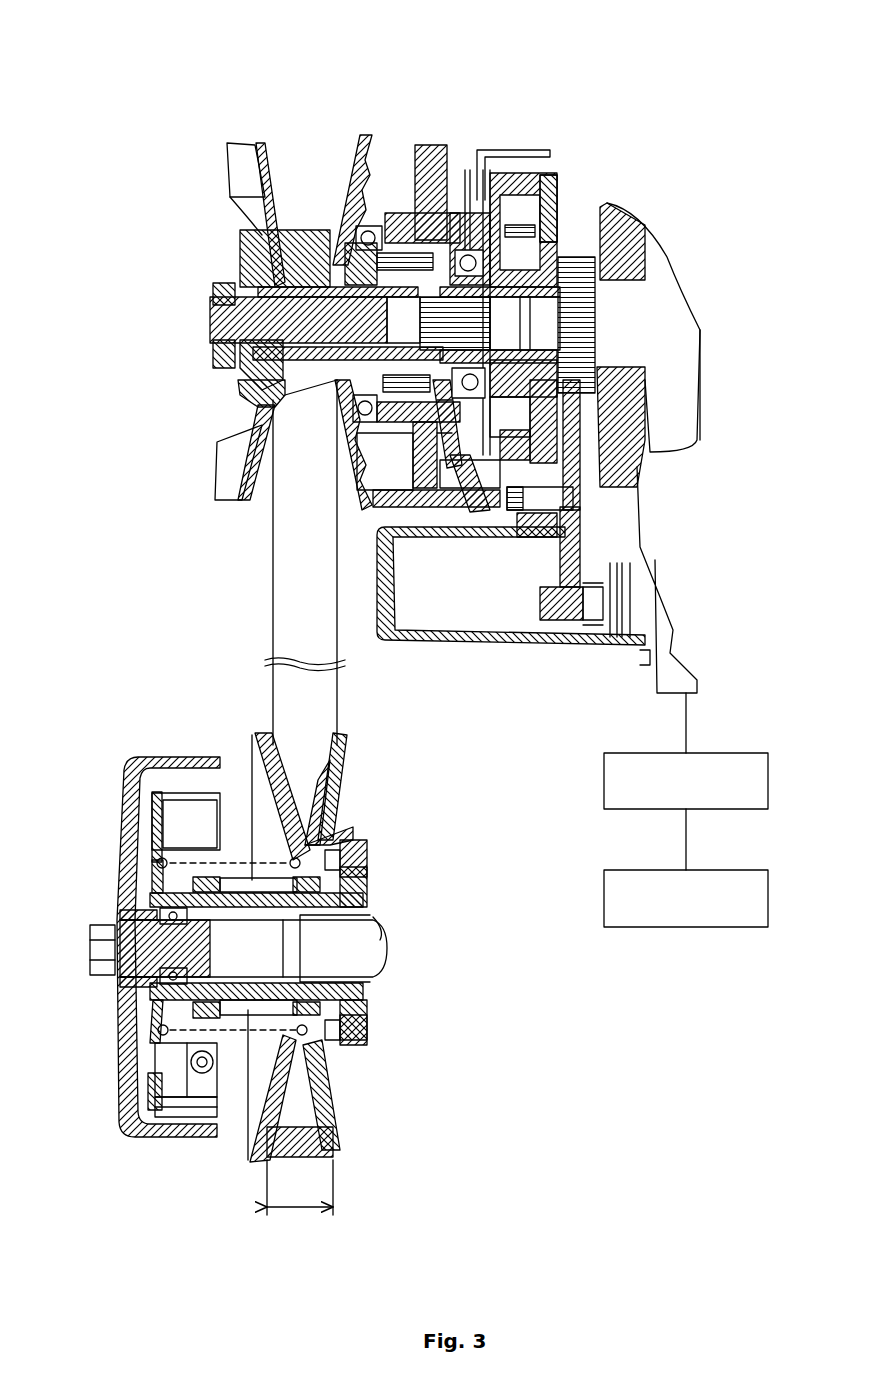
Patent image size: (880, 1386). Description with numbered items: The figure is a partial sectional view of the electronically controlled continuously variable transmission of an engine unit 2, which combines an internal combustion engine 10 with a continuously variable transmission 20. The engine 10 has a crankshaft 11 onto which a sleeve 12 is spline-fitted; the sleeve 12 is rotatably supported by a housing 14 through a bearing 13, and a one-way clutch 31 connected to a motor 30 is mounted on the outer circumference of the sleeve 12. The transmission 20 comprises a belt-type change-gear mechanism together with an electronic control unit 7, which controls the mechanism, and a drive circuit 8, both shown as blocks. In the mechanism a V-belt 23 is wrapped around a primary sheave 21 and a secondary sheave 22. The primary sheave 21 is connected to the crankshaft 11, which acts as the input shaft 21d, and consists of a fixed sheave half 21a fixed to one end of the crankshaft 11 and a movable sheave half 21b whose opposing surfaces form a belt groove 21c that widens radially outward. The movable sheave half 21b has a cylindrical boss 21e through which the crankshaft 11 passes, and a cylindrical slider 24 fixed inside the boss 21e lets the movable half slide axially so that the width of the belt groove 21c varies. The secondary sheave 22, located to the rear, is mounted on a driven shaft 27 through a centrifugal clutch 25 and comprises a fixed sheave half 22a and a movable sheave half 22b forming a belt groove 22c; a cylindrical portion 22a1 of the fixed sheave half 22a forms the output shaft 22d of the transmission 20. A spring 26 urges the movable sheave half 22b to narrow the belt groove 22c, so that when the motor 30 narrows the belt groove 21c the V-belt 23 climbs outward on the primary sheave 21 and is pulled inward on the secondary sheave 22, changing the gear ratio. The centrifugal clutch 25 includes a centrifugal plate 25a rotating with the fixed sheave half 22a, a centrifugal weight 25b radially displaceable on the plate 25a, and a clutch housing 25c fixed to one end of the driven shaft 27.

The engine unit 2 is at (585, 95).
The electronic control unit 7 is at (768, 890).
The drive circuit 8 is at (768, 775).
The internal combustion engine 10 is at (705, 375).
The crankshaft 11 is at (665, 300).
The sleeve 12 is at (545, 300).
The bearing 13 is at (484, 150).
The housing 14 is at (395, 570).
The continuously variable transmission 20 is at (130, 205).
The primary sheave 21 is at (238, 248).
The fixed sheave half 21a is at (236, 198).
The movable sheave half 21b is at (355, 200).
The belt groove 21c is at (287, 215).
The input shaft 21d is at (682, 448).
The cylindrical boss 21e is at (383, 225).
The secondary sheave 22 is at (340, 1105).
The fixed sheave half 22a is at (345, 792).
The cylindrical portion 22a1 is at (370, 880).
The movable sheave half 22b is at (258, 748).
The belt groove 22c is at (350, 752).
The output shaft 22d is at (331, 949).
The V-belt 23 is at (332, 697).
The cylindrical slider 24 is at (312, 395).
The centrifugal clutch 25 is at (100, 806).
The centrifugal plate 25a is at (140, 1040).
The centrifugal weight 25b is at (190, 790).
The clutch housing 25c is at (125, 770).
The spring 26 is at (365, 845).
The driven shaft 27 is at (370, 965).
The motor 30 is at (650, 612).
The one-way clutch 31 is at (520, 190).